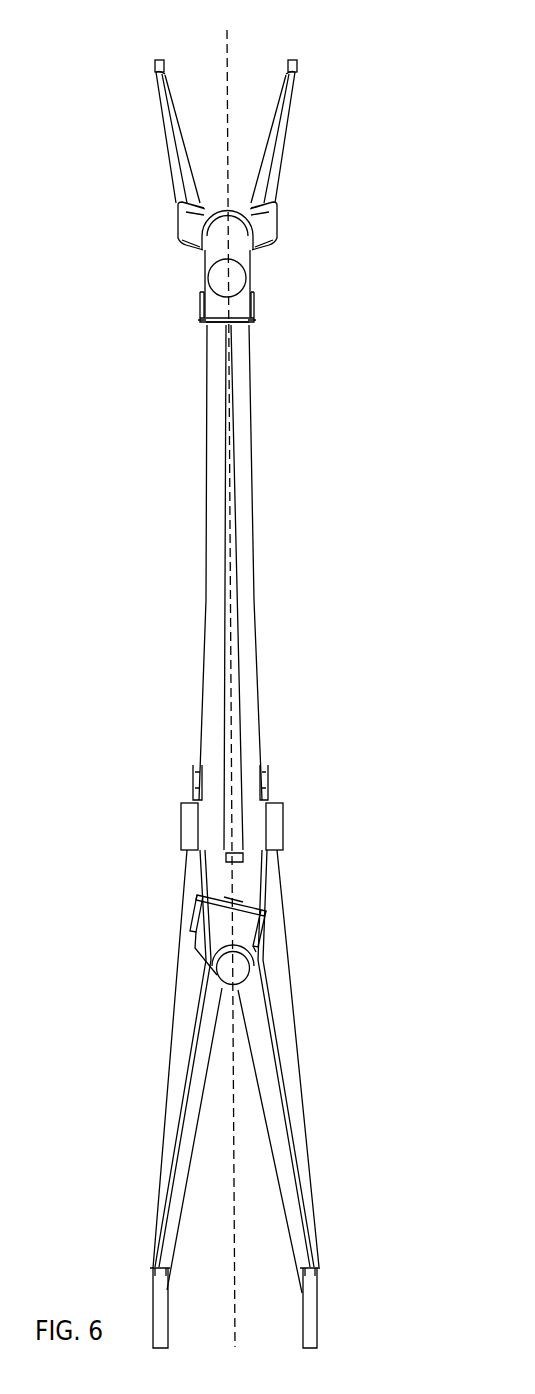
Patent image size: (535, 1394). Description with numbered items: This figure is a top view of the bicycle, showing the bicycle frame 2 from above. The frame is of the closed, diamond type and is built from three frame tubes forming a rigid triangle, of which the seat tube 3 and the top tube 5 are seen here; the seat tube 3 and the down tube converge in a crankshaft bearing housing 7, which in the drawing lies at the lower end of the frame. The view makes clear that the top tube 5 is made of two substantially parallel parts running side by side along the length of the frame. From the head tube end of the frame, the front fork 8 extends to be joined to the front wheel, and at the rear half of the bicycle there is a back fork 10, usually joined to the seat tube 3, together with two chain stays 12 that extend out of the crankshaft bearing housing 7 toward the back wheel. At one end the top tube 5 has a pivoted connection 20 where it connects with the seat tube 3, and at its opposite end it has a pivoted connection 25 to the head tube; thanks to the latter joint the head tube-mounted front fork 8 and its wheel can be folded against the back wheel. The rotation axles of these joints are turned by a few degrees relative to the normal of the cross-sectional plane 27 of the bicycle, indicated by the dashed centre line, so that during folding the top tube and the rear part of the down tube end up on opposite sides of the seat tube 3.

The bicycle frame 2 is at (128, 578).
The seat tube 3 is at (225, 977).
The top tube 5 is at (213, 402).
The crankshaft bearing housing 7 is at (181, 808).
The front fork 8 is at (165, 130).
The back fork 10 is at (273, 1102).
The chain stays 12 is at (159, 1128).
The pivoted connection 20 is at (253, 942).
The pivoted connection 25 is at (254, 310).
The cross-sectional plane 27 is at (226, 31).